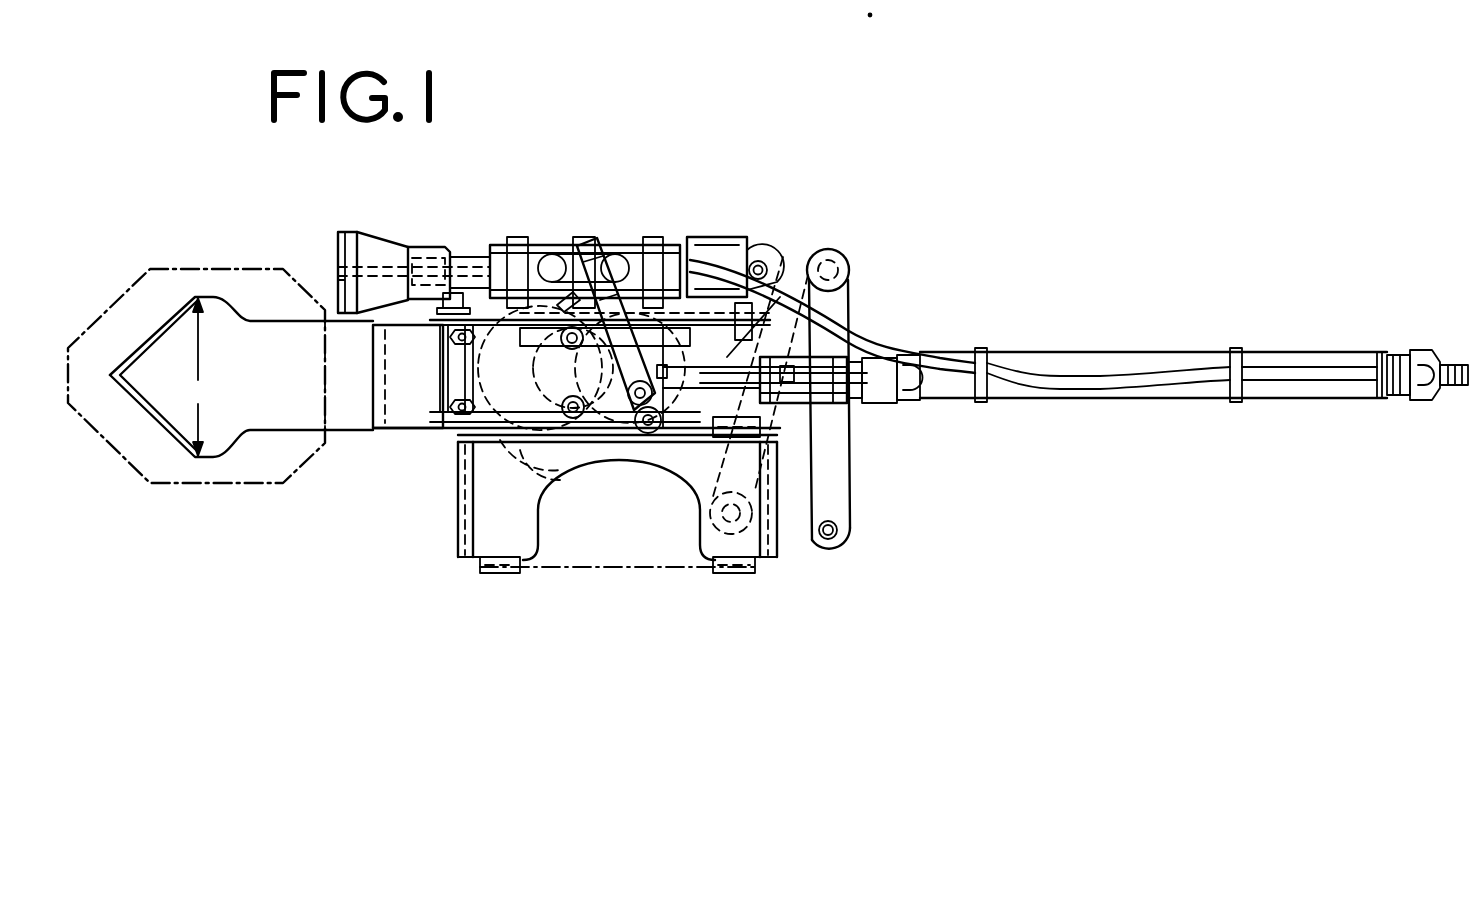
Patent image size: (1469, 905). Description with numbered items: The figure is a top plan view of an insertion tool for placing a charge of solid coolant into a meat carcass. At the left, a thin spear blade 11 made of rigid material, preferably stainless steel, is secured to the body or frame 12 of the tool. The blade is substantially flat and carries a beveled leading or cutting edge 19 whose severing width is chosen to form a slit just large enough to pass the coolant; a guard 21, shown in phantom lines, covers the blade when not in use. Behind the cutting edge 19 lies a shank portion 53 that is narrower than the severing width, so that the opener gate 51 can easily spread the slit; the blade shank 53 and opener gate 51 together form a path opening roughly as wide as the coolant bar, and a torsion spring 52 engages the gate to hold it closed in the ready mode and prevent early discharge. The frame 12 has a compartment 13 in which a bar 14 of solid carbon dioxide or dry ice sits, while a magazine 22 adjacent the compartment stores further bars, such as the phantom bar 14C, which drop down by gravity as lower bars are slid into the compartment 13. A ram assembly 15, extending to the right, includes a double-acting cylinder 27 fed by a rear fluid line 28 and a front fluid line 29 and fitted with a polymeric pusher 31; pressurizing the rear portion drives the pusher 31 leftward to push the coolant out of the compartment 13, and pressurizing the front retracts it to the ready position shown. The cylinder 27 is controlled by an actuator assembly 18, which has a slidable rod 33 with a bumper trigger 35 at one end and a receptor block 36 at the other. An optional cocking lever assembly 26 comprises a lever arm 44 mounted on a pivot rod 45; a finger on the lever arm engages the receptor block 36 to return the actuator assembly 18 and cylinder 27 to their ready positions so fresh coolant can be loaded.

The spear blade 11 is at (273, 413).
The body or frame 12 is at (840, 404).
The compartment 13 is at (470, 477).
The bar of solid coolant 14 is at (774, 267).
The solid coolant bar 14C is at (620, 563).
The ram assembly 15 is at (1192, 354).
The actuator assembly 18 is at (605, 239).
The leading edge or cutting edge 19 is at (180, 447).
The guard 21 is at (223, 268).
The magazine 22 is at (493, 542).
The cocking lever assembly 26 is at (848, 543).
The double-acting cylinder 27 is at (1140, 392).
The rear fluid line 28 is at (1350, 376).
The front fluid line 29 is at (820, 370).
The pusher 31 is at (832, 363).
The rod 33 is at (477, 263).
The bumper trigger 35 is at (372, 242).
The receptor block 36 is at (740, 246).
The lever arm 44 is at (830, 465).
The pivot rod 45 is at (790, 368).
The opener gate 51 is at (410, 408).
The torsion spring 52 is at (432, 410).
The shank portion 53 is at (350, 422).